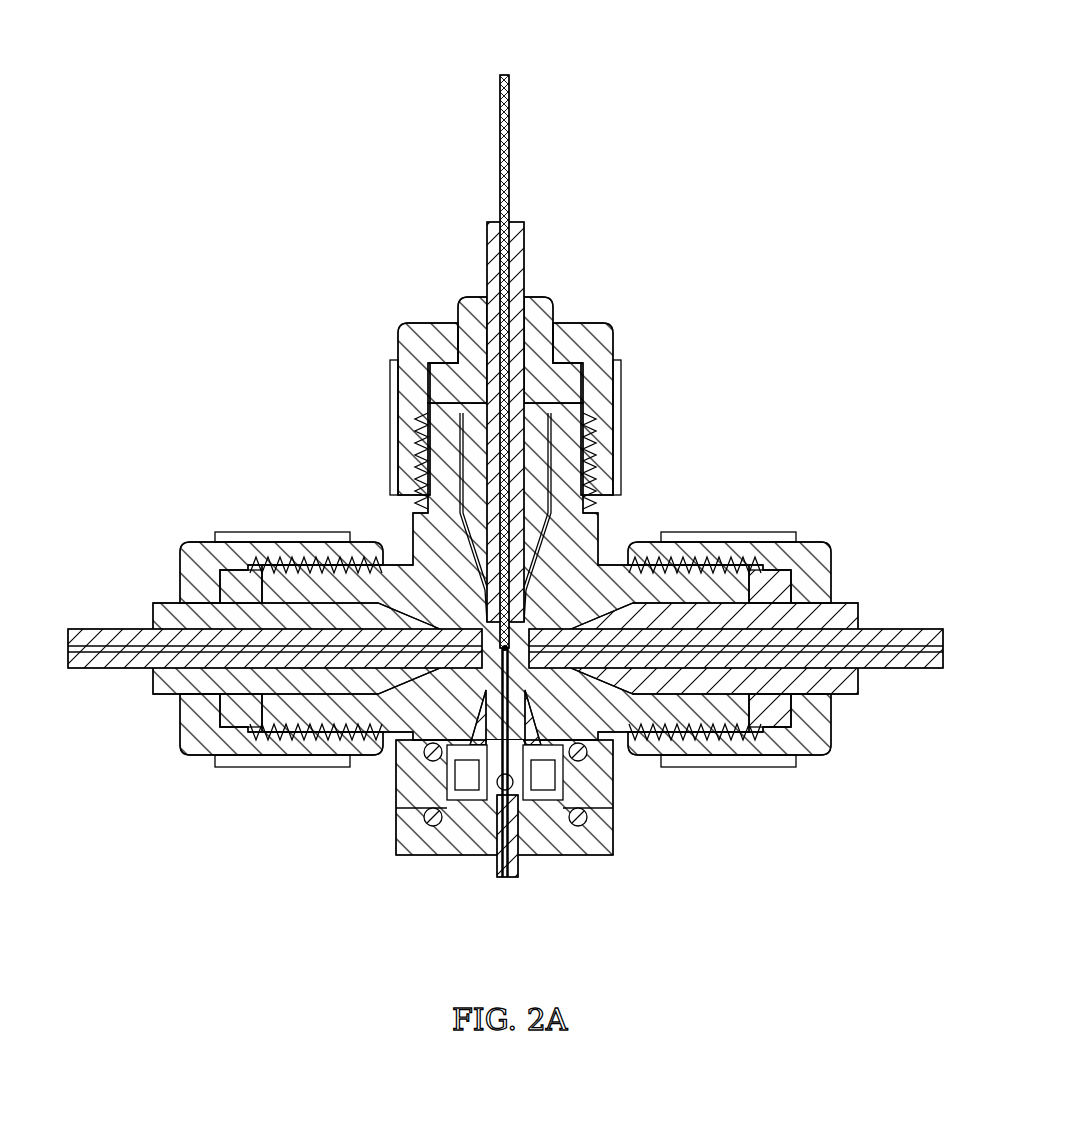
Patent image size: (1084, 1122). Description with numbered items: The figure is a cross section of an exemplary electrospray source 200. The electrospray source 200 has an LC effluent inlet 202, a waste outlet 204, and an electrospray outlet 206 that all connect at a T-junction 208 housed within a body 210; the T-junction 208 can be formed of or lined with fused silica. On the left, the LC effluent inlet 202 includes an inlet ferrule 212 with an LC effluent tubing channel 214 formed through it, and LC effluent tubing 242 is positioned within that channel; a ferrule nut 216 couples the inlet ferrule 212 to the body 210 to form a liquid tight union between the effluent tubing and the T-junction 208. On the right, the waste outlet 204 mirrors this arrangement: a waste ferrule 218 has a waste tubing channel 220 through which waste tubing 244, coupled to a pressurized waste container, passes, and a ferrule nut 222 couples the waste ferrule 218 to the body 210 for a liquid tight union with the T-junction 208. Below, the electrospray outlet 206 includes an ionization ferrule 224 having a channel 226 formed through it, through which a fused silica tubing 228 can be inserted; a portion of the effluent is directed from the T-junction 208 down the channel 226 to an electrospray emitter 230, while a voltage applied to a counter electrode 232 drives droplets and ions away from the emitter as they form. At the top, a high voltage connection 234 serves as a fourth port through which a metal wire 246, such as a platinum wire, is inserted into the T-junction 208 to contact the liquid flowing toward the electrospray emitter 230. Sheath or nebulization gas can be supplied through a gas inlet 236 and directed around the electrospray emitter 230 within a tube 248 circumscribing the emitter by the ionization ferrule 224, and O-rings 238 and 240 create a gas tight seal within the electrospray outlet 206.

The electrospray source 200 is at (727, 128).
The LC effluent inlet 202 is at (120, 585).
The waste outlet 204 is at (872, 567).
The electrospray outlet 206 is at (503, 903).
The T-junction 208 is at (522, 632).
The body 210 is at (430, 535).
The inlet ferrule 212 is at (240, 680).
The LC effluent tubing channel 214 is at (160, 692).
The ferrule nut 216 is at (243, 540).
The waste ferrule 218 is at (820, 690).
The waste tubing channel 220 is at (817, 675).
The ferrule nut 222 is at (750, 537).
The ionization ferrule 224 is at (540, 800).
The channel 226 is at (525, 805).
The fused silica tubing 228 is at (420, 758).
The electrospray emitter 230 is at (502, 878).
The counter electrode 232 is at (412, 845).
The high voltage connection 234 is at (567, 293).
The gas inlet 236 is at (475, 805).
The O-ring 238 is at (590, 748).
The O-ring 240 is at (597, 823).
The LC effluent tubing 242 is at (125, 640).
The waste tubing 244 is at (872, 627).
The metal wire 246 is at (512, 163).
The tube 248 is at (515, 870).